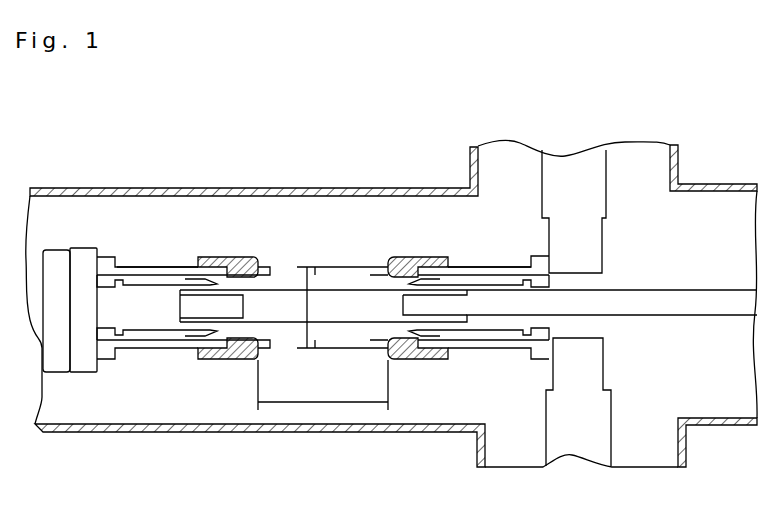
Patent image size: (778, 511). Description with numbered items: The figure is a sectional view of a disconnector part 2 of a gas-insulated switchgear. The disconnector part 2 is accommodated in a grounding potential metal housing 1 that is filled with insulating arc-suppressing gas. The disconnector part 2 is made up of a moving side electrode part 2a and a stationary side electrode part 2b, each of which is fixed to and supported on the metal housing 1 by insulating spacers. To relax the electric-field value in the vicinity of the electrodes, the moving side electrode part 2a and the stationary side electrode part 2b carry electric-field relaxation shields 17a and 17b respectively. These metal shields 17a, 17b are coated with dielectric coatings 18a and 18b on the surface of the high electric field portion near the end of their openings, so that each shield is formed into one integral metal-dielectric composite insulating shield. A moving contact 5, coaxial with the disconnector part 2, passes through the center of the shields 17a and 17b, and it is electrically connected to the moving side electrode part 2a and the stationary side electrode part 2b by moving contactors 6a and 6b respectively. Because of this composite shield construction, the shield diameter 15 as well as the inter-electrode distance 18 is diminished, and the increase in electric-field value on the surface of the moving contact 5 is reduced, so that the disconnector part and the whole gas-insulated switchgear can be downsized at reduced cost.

The metal housing 1 is at (310, 432).
The disconnector part 2 is at (305, 250).
The moving side electrode part 2a is at (492, 267).
The stationary side electrode part 2b is at (170, 275).
The moving contact 5 is at (347, 303).
The moving contactor 6a is at (478, 333).
The moving contactor 6b is at (167, 334).
The shield diameter 15 is at (301, 307).
The electric-field relaxation shield 17a is at (458, 270).
The electric-field relaxation shield 17b is at (152, 276).
The inter-electrode distance 18 is at (323, 385).
The dielectric coating 18a is at (400, 257).
The dielectric coating 18b is at (223, 257).